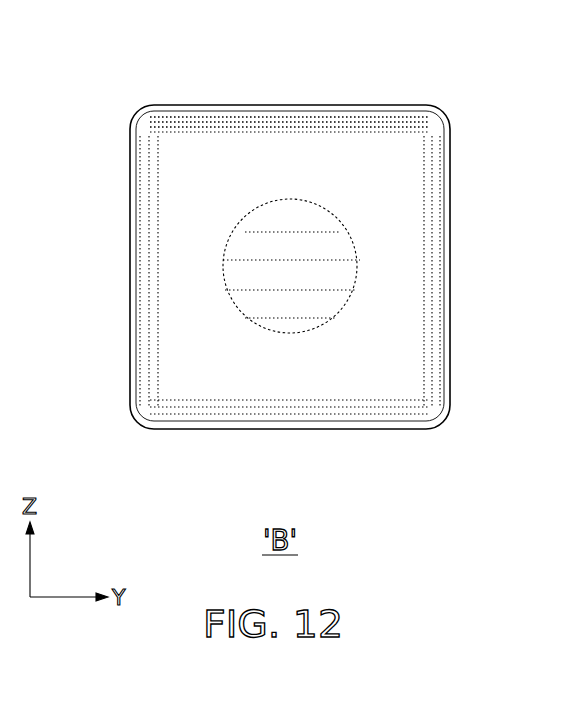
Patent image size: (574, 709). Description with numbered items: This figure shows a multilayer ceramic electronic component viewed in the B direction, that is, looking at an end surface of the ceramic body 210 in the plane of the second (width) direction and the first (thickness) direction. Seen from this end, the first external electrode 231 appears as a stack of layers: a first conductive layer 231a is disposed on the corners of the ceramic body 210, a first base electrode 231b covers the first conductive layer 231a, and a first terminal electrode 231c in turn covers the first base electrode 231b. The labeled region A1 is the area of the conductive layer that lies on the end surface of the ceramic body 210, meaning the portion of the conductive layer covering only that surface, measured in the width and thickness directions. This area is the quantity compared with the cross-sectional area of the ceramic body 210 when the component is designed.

The ceramic body 210 is at (371, 133).
The first external electrode 231 is at (330, 47).
The first conductive layer 231a is at (197, 128).
The first base electrode 231b is at (257, 122).
The first terminal electrode 231c is at (305, 116).
The area of the first conductive layer A1 is at (286, 367).